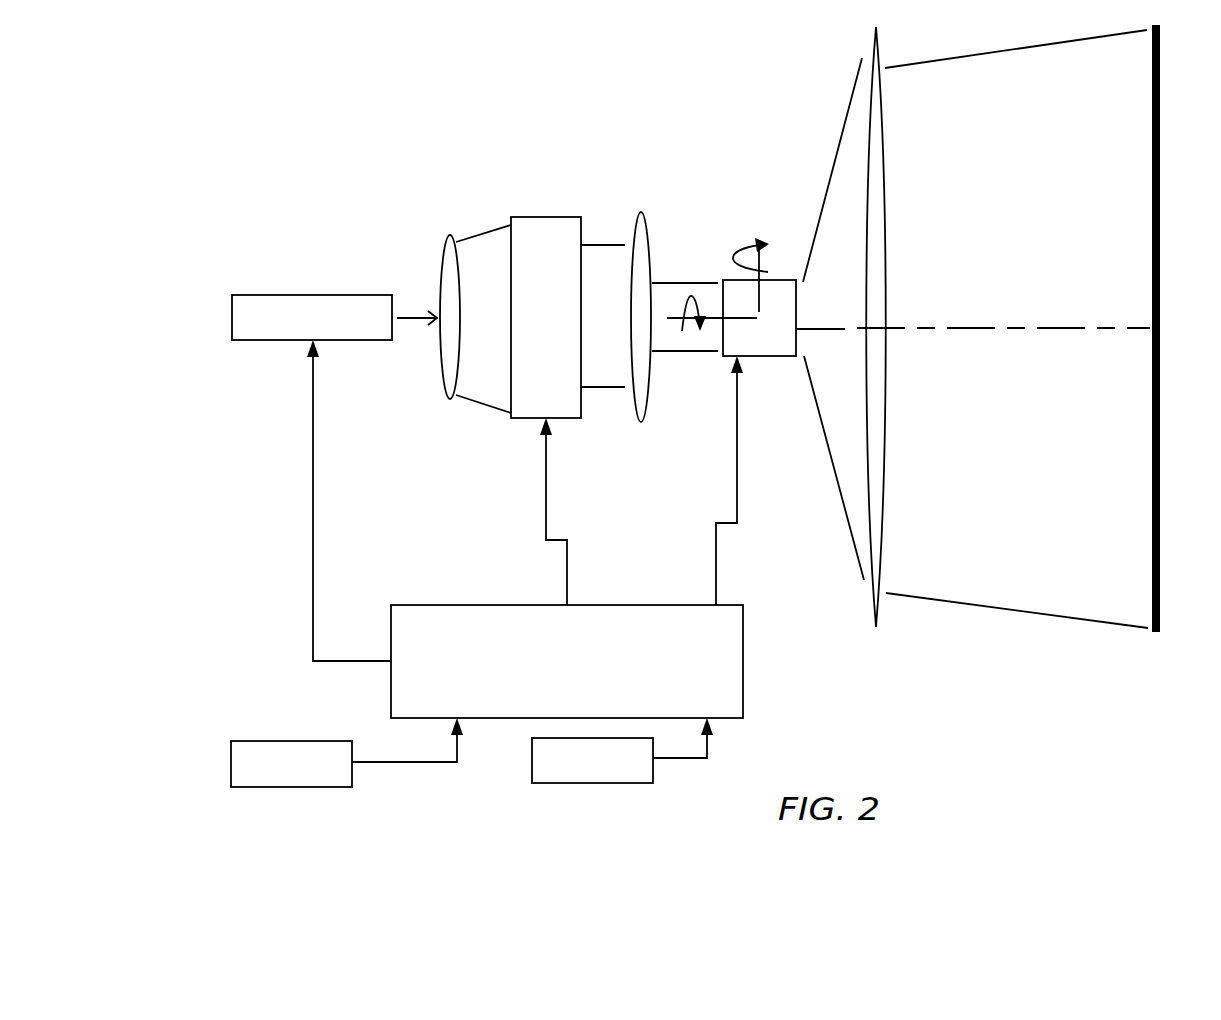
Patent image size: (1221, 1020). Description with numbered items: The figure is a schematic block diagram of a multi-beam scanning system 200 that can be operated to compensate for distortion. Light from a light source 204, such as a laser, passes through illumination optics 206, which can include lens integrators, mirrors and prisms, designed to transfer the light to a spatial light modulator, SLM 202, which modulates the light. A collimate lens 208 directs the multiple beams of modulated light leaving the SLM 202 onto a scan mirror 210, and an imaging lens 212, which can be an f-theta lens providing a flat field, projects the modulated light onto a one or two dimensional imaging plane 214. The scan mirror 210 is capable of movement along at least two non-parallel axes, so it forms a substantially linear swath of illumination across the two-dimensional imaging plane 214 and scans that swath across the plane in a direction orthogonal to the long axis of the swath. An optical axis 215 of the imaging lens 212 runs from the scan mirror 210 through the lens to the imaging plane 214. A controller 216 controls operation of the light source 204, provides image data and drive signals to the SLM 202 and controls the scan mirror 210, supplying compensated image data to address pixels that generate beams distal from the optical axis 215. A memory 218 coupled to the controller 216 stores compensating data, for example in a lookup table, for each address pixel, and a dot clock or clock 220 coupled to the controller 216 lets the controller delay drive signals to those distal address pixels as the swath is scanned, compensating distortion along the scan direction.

The scanning system 200 is at (388, 90).
The spatial light modulator 202 is at (540, 217).
The light source 204 is at (316, 295).
The illumination optics 206 is at (453, 400).
The collimate lens 208 is at (641, 422).
The scan mirror 210 is at (760, 357).
The imaging lens 212 is at (876, 627).
The imaging plane 214 is at (1158, 634).
The optical axis 215 is at (1000, 327).
The controller 216 is at (525, 529).
The memory 218 is at (283, 741).
The clock 220 is at (587, 784).